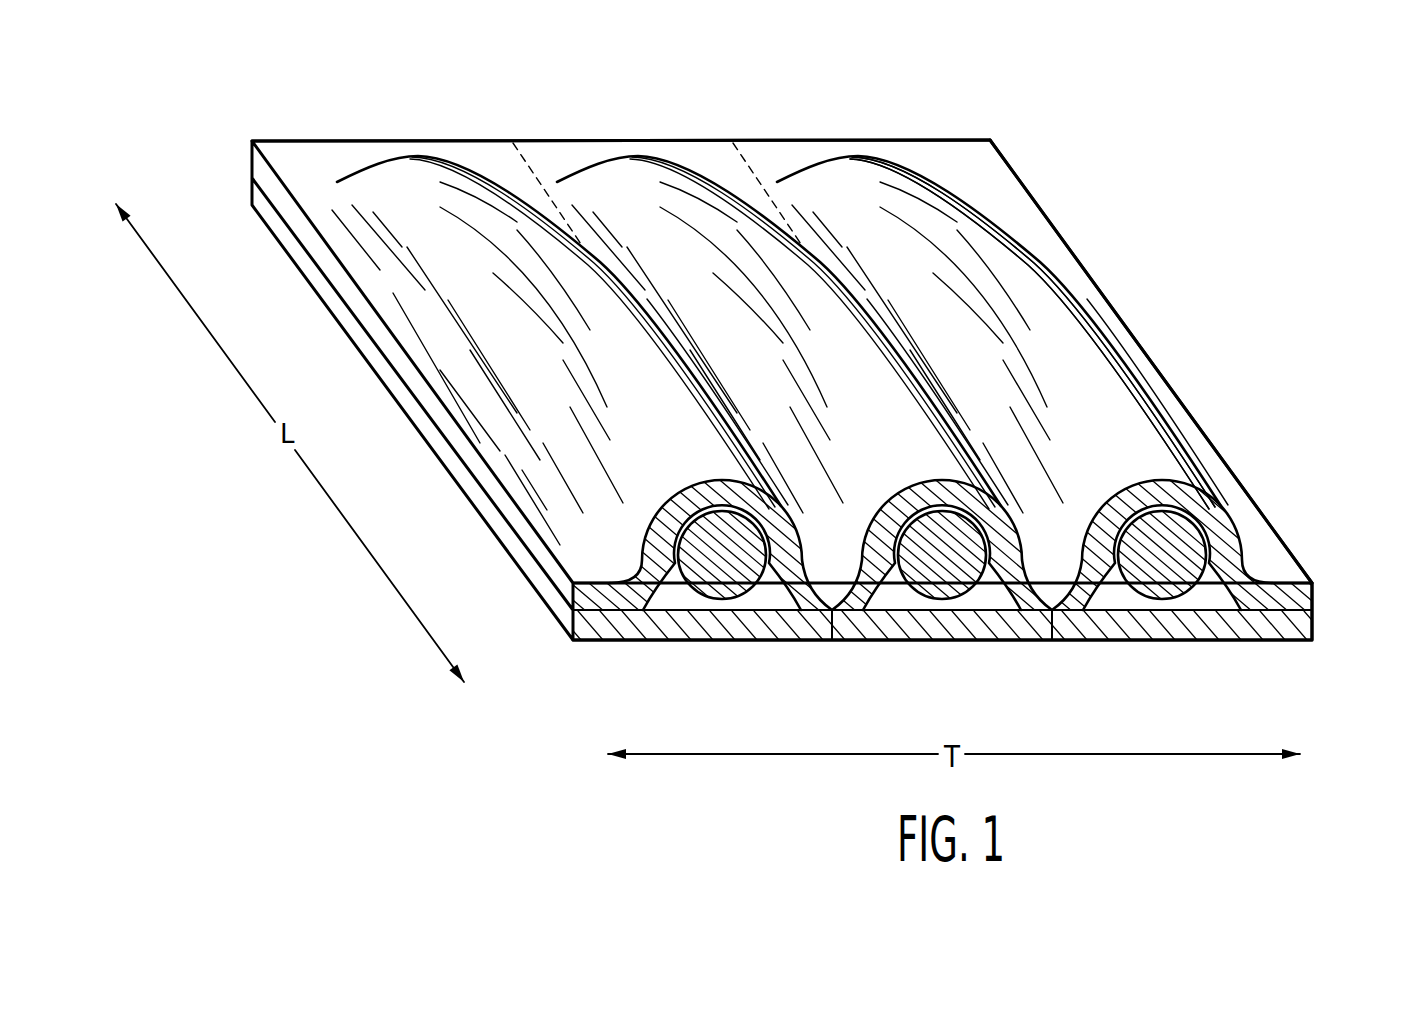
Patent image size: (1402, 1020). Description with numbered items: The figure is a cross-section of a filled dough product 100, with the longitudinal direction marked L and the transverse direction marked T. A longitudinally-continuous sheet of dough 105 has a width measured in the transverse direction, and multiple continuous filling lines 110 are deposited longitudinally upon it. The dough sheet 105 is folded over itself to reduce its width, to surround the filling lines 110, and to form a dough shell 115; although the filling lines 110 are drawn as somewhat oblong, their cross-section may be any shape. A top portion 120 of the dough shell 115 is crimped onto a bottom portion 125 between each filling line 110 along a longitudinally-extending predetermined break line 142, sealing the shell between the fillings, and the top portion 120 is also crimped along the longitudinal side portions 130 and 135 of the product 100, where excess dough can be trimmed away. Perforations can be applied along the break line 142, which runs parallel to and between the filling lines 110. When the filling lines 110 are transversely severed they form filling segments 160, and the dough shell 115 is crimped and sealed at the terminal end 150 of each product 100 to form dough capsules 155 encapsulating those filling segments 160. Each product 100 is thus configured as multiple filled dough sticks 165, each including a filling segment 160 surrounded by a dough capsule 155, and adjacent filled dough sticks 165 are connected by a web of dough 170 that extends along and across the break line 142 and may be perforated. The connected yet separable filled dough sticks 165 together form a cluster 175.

The filled dough product 100 is at (1198, 327).
The sheet of dough 105 is at (703, 627).
The filling lines 110 is at (926, 590).
The dough shell 115 is at (1062, 590).
The top portion 120 is at (1105, 587).
The bottom portion 125 is at (1275, 628).
The longitudinal side portion 130 is at (450, 388).
The longitudinal side portion 135 is at (1267, 553).
The predetermined break line 142 is at (530, 168).
The terminal end 150 is at (836, 141).
The dough capsule 155 is at (1033, 286).
The filling segment 160 is at (1183, 590).
The filled dough stick 165 is at (1077, 343).
The web of dough 170 is at (845, 612).
The cluster 175 is at (973, 178).